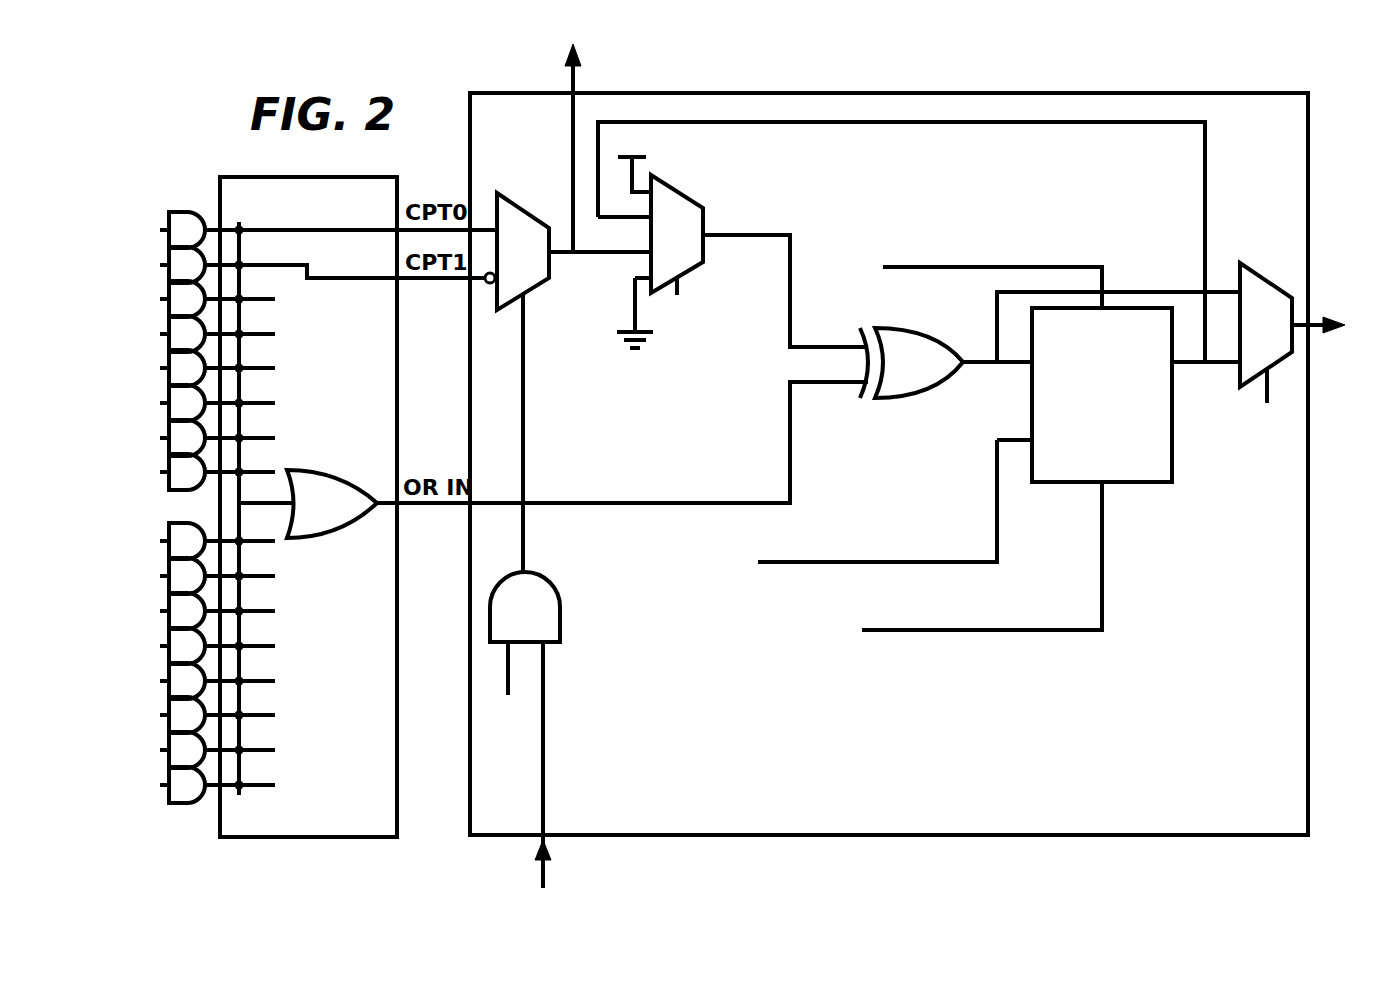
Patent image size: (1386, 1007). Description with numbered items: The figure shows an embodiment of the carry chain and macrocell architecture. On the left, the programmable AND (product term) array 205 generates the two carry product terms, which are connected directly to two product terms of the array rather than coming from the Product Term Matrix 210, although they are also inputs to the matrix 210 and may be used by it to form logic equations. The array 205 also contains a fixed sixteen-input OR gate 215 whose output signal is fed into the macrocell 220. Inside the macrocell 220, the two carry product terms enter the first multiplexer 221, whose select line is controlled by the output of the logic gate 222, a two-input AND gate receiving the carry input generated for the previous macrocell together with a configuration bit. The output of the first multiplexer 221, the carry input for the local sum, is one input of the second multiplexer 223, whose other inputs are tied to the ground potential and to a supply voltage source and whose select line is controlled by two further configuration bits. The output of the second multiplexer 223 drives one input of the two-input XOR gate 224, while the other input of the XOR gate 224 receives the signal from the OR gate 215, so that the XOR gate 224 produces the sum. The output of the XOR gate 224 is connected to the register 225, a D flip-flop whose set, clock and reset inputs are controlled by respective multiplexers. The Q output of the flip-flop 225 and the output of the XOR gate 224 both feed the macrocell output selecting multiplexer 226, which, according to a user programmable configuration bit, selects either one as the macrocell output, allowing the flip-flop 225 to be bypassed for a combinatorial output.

The programmable AND (product term) array 205 is at (195, 208).
The Product Term Matrix 210 is at (397, 632).
The OR gate 215 is at (314, 480).
The macrocell 220 is at (880, 93).
The multiplexer MUX1 221 is at (549, 263).
The logic gate G1 222 is at (533, 574).
The multiplexer MUX2 223 is at (706, 243).
The XOR gate G2 224 is at (900, 326).
The register 225 is at (1174, 438).
The macrocell output selecting multiplexer 226 is at (1268, 277).